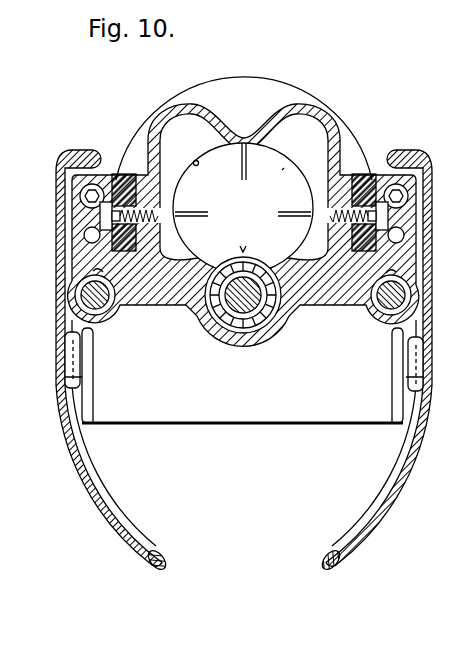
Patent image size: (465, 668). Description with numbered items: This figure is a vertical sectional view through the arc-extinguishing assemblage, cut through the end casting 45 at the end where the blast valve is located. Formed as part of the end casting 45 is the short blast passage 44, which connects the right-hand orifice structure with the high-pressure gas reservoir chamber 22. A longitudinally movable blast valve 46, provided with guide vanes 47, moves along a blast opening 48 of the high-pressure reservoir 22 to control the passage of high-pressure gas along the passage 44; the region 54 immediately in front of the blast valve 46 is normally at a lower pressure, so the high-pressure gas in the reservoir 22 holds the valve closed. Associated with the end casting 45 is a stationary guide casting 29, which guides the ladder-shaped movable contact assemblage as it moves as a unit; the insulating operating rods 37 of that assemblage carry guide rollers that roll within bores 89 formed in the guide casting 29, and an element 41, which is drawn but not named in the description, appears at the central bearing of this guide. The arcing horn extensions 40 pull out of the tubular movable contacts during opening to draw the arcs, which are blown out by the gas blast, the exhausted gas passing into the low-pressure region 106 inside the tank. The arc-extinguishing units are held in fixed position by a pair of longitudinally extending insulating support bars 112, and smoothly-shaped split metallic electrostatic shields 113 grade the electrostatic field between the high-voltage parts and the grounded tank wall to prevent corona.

The high-pressure gas reservoir chamber 22 is at (257, 76).
The end casting 45 is at (168, 112).
The insulating support bars 112 is at (120, 174).
The region 54 is at (272, 201).
The guide vanes 47 is at (213, 209).
The blast opening 48 is at (194, 162).
The blast valve 46 is at (284, 168).
The arcing horn extensions 40 is at (256, 330).
The bearing race 41 is at (213, 328).
The blast passage 44 is at (256, 240).
The guide casting 29 is at (72, 298).
The operating rods 37 is at (101, 312).
The bores 89 is at (99, 276).
The split metallic electrostatic shields 113 is at (78, 492).
The region 106 is at (250, 494).